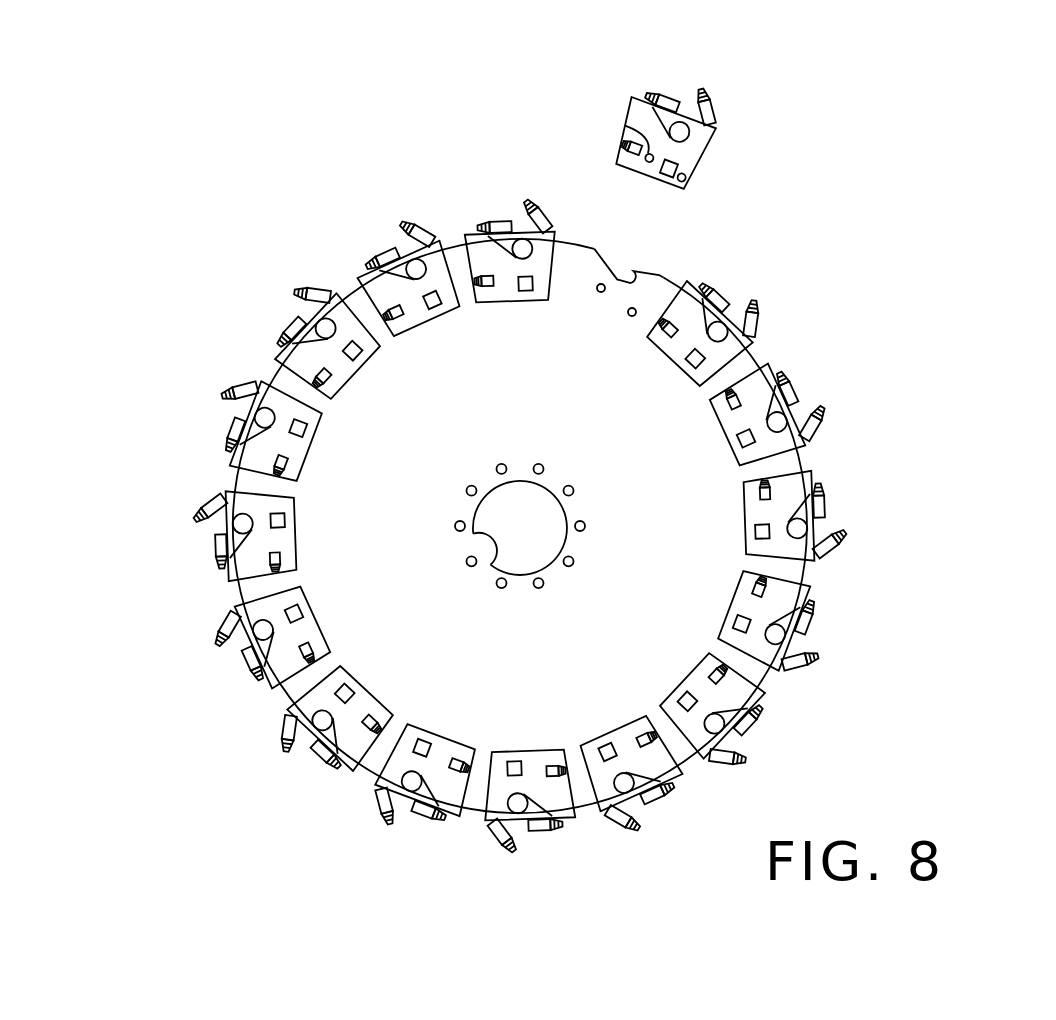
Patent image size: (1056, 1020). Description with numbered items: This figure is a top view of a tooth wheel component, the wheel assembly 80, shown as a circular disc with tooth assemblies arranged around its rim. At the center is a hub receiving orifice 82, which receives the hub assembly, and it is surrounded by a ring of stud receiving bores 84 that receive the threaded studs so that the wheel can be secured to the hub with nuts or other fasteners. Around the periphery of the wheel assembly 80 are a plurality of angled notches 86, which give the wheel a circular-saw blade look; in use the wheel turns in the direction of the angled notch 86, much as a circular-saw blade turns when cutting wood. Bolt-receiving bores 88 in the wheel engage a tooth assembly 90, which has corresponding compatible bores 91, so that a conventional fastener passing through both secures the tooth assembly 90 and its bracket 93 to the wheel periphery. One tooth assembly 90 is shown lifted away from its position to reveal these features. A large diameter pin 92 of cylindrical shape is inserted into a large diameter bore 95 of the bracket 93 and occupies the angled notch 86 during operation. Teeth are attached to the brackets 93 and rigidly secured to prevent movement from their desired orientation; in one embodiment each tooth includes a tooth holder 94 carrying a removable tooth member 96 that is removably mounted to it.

The wheel assembly 80 is at (778, 340).
The hub receiving orifice 82 is at (493, 565).
The stud receiving bores 84 is at (585, 522).
The angled notches 86 is at (650, 266).
The bolt-receiving bores 88 is at (598, 292).
The tooth assembly 90 is at (742, 106).
The compatible bores 91 is at (627, 123).
The large diameter pin 92 is at (248, 407).
The bracket 93 is at (852, 511).
The tooth holder 94 is at (247, 388).
The large diameter bore 95 is at (683, 130).
The removable tooth member 96 is at (240, 452).